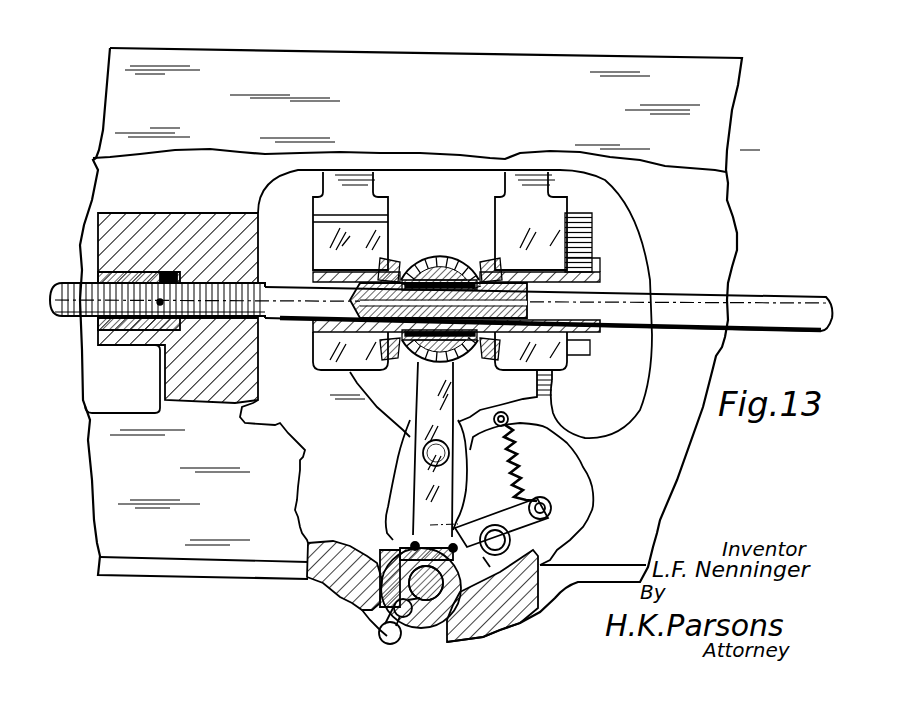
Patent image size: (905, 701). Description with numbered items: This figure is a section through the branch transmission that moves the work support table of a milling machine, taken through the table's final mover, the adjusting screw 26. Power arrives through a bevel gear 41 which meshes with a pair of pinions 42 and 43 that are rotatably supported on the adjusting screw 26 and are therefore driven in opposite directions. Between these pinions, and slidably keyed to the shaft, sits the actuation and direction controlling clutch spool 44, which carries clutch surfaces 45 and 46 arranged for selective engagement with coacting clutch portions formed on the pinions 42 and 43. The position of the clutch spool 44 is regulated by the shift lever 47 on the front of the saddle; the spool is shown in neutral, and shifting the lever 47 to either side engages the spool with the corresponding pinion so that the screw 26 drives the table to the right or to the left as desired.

The adjusting screw 26 is at (767, 318).
The bevel gear 41 is at (452, 262).
The pinion 42 is at (392, 262).
The pinion 43 is at (480, 262).
The clutch spool 44 is at (432, 262).
The clutch surface 45 is at (412, 264).
The clutch surface 46 is at (468, 262).
The shift lever 47 is at (427, 480).